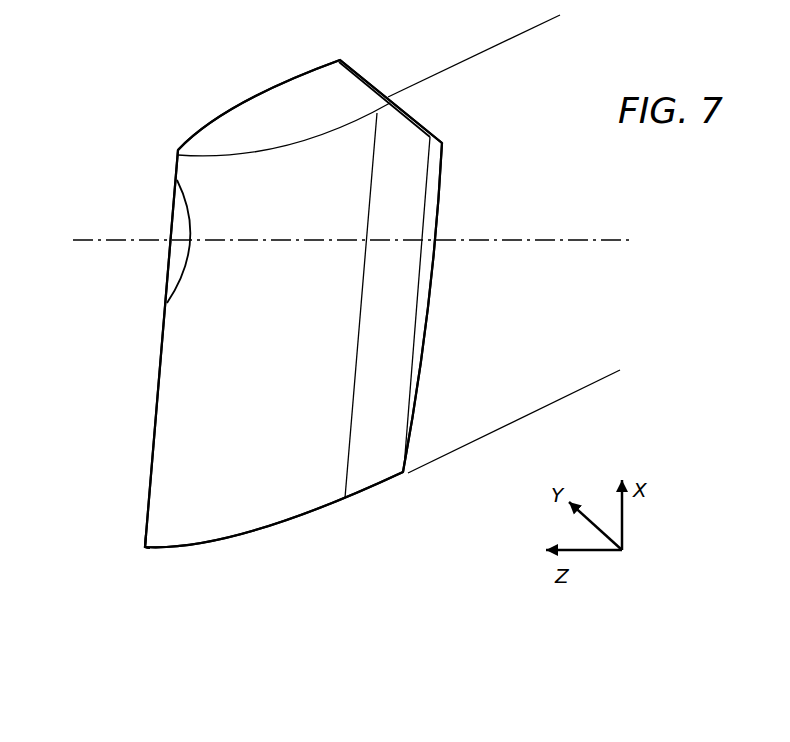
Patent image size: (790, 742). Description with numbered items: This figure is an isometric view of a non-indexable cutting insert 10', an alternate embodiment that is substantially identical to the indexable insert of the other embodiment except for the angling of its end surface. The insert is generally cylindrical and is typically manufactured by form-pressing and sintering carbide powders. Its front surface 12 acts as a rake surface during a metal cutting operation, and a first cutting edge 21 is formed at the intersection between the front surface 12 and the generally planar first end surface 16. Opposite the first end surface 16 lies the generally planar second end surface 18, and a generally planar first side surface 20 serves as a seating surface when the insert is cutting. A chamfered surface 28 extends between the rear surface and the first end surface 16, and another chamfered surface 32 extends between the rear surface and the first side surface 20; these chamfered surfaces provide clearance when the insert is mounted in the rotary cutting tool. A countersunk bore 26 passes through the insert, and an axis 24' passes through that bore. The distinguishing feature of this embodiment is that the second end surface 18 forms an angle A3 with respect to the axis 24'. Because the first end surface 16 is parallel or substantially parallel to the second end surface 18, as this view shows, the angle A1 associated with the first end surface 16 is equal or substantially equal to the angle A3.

The non-indexable cutting insert 10' is at (257, 286).
The front surface 12 is at (146, 422).
The first end surface 16 is at (243, 549).
The second end surface 18 is at (268, 111).
The first side surface 20 is at (371, 452).
The first cutting edge 21 is at (145, 547).
The axis 24' is at (333, 215).
The countersunk bore 26 is at (180, 279).
The chamfered surface 28 is at (416, 111).
The chamfered surface 32 is at (419, 381).
The angle A3 is at (553, 238).
The angle A1 is at (553, 244).